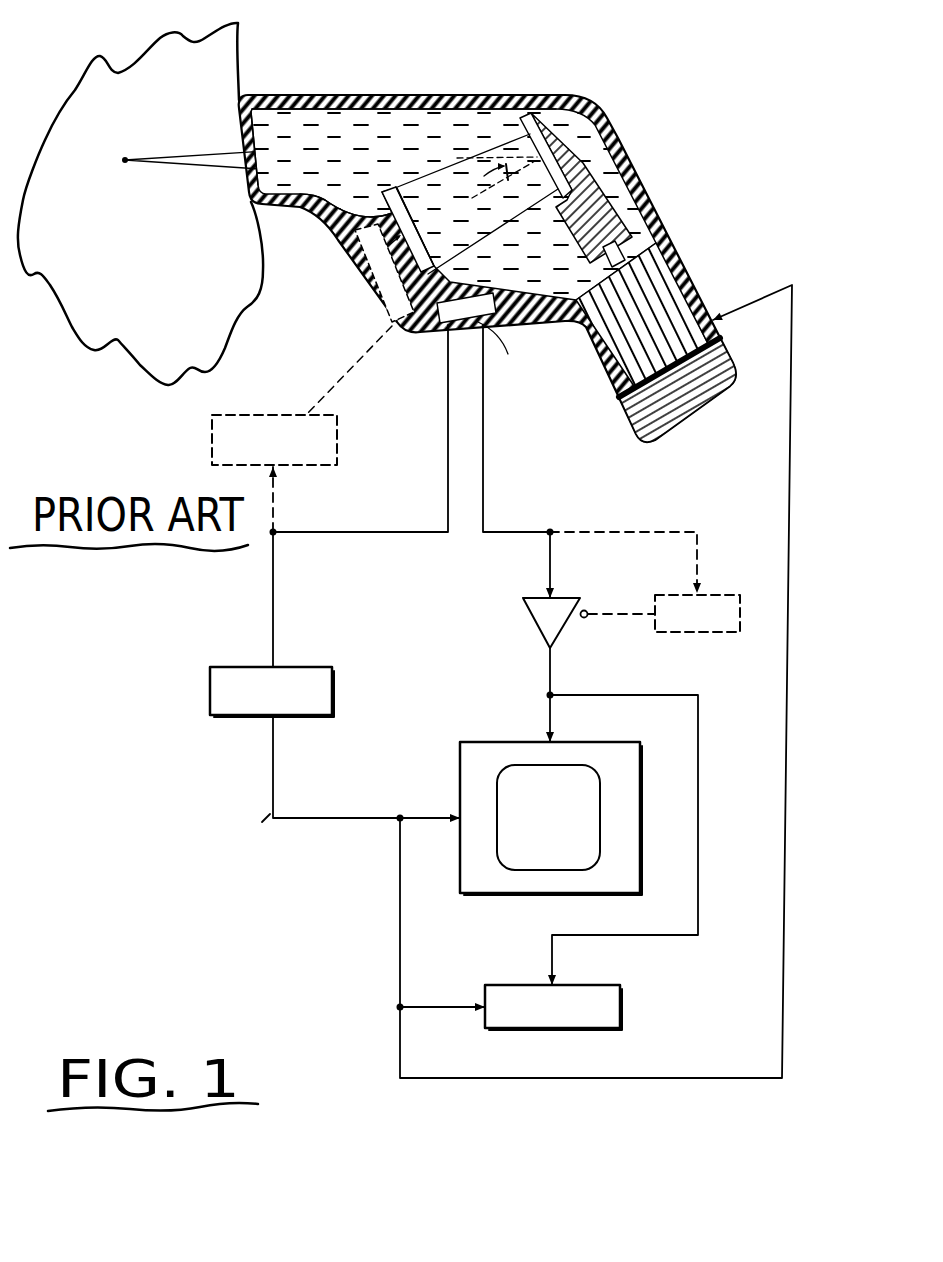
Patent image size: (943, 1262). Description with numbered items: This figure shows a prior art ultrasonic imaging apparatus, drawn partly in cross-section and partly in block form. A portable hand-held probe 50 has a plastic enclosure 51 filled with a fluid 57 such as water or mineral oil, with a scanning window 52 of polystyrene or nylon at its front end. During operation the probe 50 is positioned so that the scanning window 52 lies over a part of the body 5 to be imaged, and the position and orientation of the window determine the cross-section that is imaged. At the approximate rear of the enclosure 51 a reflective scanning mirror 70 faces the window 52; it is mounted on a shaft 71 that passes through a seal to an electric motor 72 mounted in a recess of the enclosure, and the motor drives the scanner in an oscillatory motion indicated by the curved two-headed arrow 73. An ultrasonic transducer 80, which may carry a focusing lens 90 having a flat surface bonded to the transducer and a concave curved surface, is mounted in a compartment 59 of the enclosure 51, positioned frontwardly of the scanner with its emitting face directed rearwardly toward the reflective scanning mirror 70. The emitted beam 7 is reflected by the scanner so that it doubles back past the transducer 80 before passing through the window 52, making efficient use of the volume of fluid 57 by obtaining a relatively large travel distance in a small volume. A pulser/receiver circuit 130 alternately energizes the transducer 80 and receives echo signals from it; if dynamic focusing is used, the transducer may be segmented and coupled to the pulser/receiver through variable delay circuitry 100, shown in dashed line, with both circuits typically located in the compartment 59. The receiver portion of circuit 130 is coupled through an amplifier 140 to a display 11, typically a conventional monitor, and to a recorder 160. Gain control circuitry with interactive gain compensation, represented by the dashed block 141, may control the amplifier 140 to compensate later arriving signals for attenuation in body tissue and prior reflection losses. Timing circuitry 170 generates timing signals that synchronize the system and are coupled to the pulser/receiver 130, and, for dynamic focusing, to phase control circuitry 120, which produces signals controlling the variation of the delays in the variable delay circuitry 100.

The body 5 is at (156, 66).
The beam 7 is at (180, 170).
The display 11 is at (494, 745).
The probe 50 is at (458, 238).
The enclosure 51 is at (616, 137).
The scanning window 52 is at (233, 128).
The fluid 57 is at (461, 96).
The compartment 59 is at (333, 222).
The reflective scanning mirror 70 is at (535, 114).
The shaft 71 is at (630, 237).
The electric motor 72 is at (700, 296).
The curved two-headed arrow 73 is at (590, 265).
The ultrasonic transducer 80 is at (405, 214).
The focusing lens 90 is at (420, 247).
The variable delay circuitry 100 is at (353, 272).
The phase control circuitry 120 is at (337, 416).
The pulser/receiver circuit 130 is at (498, 318).
The amplifier 140 is at (524, 604).
The gain control circuitry (IGC) 141 is at (736, 596).
The recorder 160 is at (622, 986).
The timing circuitry 170 is at (333, 668).